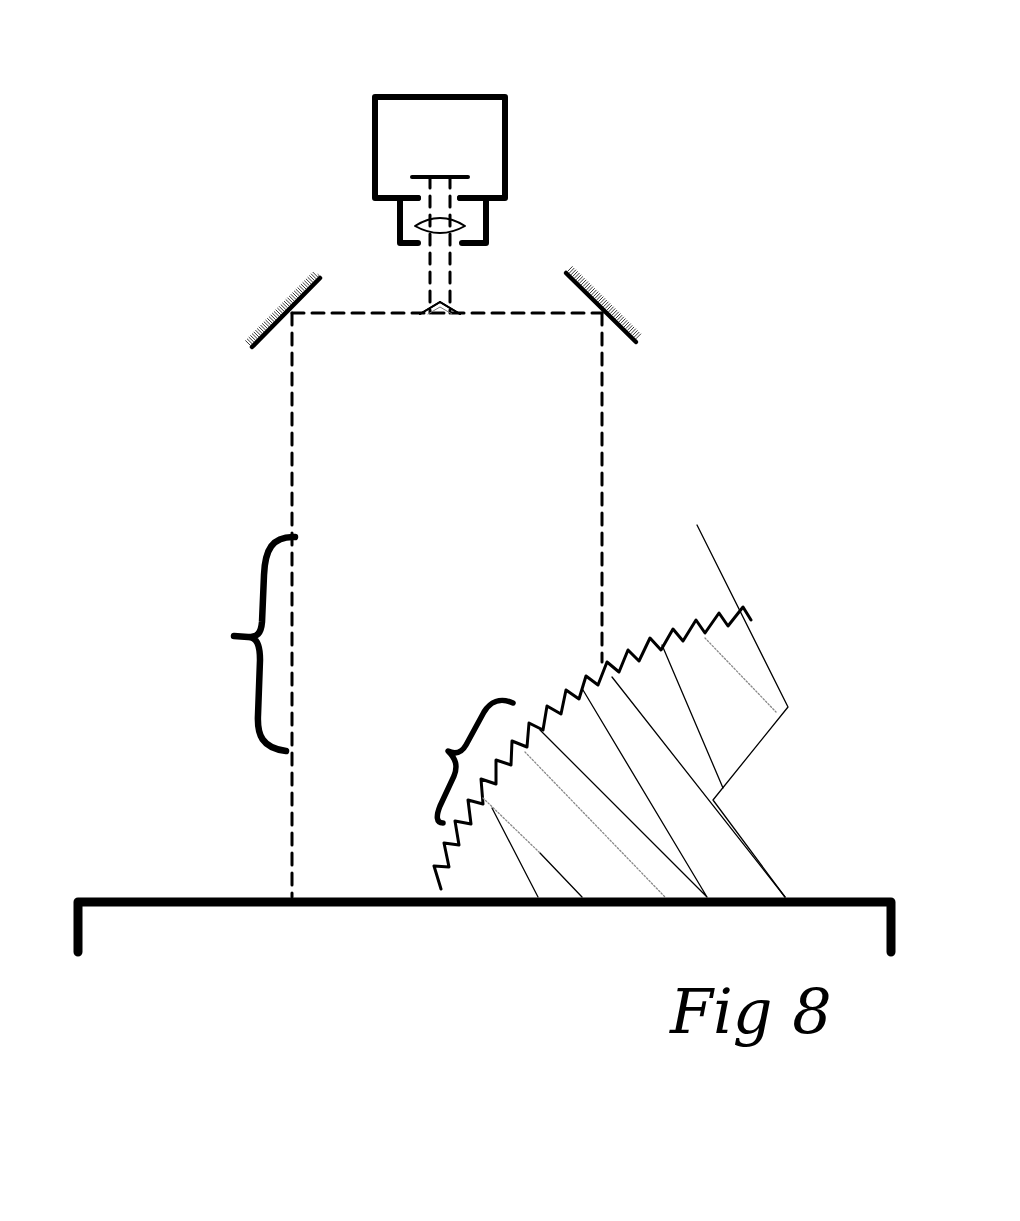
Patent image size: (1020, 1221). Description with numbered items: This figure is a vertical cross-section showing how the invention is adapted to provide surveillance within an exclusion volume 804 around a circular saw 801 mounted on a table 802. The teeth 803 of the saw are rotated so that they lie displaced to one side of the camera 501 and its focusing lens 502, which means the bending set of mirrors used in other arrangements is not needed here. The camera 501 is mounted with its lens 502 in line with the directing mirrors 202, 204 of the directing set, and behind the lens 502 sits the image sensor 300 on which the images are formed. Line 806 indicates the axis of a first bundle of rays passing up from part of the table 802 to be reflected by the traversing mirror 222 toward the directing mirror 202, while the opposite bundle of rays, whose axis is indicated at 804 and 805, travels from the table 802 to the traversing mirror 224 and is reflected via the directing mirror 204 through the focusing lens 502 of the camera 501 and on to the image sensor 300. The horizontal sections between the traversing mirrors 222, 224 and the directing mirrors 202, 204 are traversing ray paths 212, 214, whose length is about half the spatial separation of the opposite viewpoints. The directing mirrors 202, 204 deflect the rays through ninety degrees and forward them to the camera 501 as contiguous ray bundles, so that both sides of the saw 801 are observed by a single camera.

The camera 501 is at (455, 97).
The image sensor 300 is at (460, 172).
The focusing lens 502 is at (467, 227).
The traversing ray path 212 is at (356, 310).
The traversing mirror 222 is at (312, 282).
The traversing ray path 214 is at (490, 312).
The traversing mirror 224 is at (630, 316).
The directing mirror 202 is at (425, 318).
The directing mirror 204 is at (455, 318).
The axis of first bundle of rays 806 is at (291, 481).
The right laser beam 805 is at (604, 468).
The exclusion volume 804 is at (238, 644).
The teeth 803 is at (455, 761).
The circular saw 801 is at (746, 680).
The table 802 is at (148, 895).